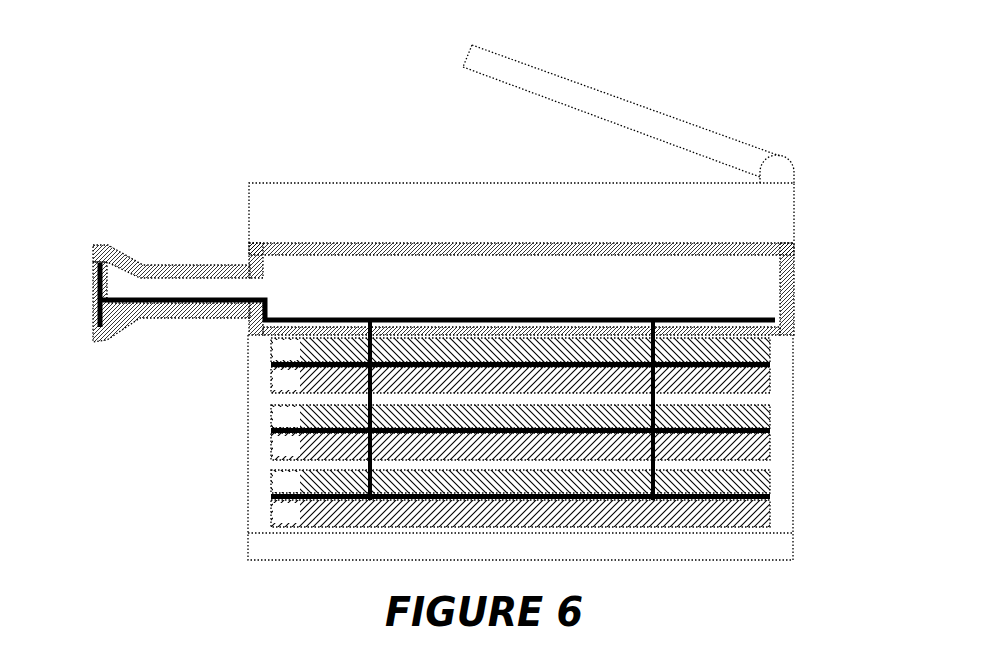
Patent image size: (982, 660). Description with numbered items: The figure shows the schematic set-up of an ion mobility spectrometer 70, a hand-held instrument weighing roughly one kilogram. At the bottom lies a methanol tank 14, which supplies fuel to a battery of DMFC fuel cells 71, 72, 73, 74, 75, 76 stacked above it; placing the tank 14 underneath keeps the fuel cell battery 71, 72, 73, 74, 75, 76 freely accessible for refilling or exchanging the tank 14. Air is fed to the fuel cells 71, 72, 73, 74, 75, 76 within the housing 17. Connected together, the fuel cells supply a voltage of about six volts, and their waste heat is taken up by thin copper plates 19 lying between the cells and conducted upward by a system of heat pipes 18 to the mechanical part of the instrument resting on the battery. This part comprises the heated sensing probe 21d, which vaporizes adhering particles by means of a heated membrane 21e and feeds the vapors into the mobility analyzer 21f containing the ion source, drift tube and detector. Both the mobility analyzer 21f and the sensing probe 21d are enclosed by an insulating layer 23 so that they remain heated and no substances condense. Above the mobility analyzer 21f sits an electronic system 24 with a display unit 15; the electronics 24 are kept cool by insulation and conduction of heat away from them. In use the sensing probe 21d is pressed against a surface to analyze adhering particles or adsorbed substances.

The methanol tank 14 is at (520, 545).
The display unit 15 is at (628, 114).
The housing 17 is at (508, 447).
The heat pipes 18 is at (436, 398).
The copper plates 19 is at (786, 369).
The sensing probe 21d is at (171, 261).
The heated membrane 21e is at (151, 302).
The mobility analyzer 21f is at (323, 289).
The insulating layer 23 is at (538, 289).
The electronic system 24 is at (521, 213).
The ion mobility spectrometer 70 is at (729, 580).
The DMFC fuel cell 71 is at (520, 513).
The DMFC fuel cell 72 is at (520, 481).
The DMFC fuel cell 73 is at (520, 446).
The DMFC fuel cell 74 is at (520, 416).
The DMFC fuel cell 75 is at (520, 380).
The DMFC fuel cell 76 is at (520, 350).